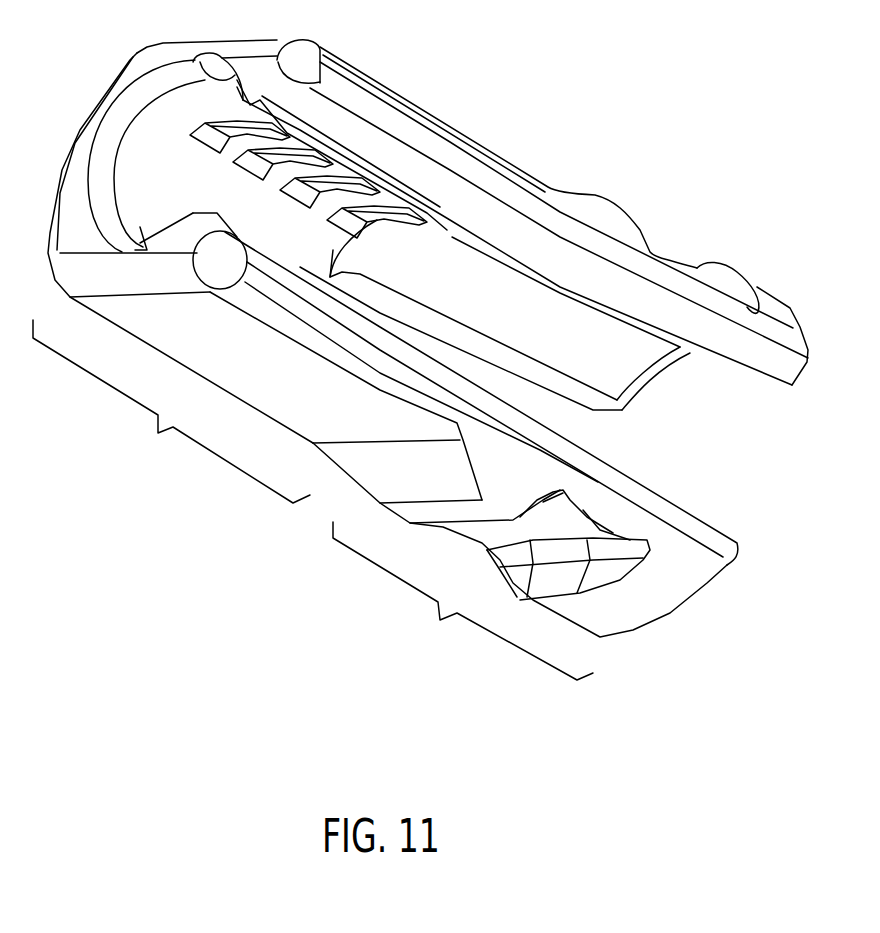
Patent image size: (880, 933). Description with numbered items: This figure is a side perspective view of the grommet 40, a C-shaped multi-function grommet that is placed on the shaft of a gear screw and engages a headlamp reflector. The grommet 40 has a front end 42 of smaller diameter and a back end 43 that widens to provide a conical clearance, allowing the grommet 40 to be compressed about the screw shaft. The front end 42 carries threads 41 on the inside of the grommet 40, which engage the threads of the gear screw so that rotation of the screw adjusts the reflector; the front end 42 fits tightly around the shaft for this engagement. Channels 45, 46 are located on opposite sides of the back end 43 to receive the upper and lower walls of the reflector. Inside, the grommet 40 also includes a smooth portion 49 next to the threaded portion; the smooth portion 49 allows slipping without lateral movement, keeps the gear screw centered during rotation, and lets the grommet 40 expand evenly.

The grommet 40 is at (535, 38).
The threads 41 is at (213, 133).
The front end 42 is at (171, 411).
The back end 43 is at (463, 601).
The channel 45 is at (728, 287).
The channel 46 is at (517, 543).
The smooth portion 49 is at (597, 348).